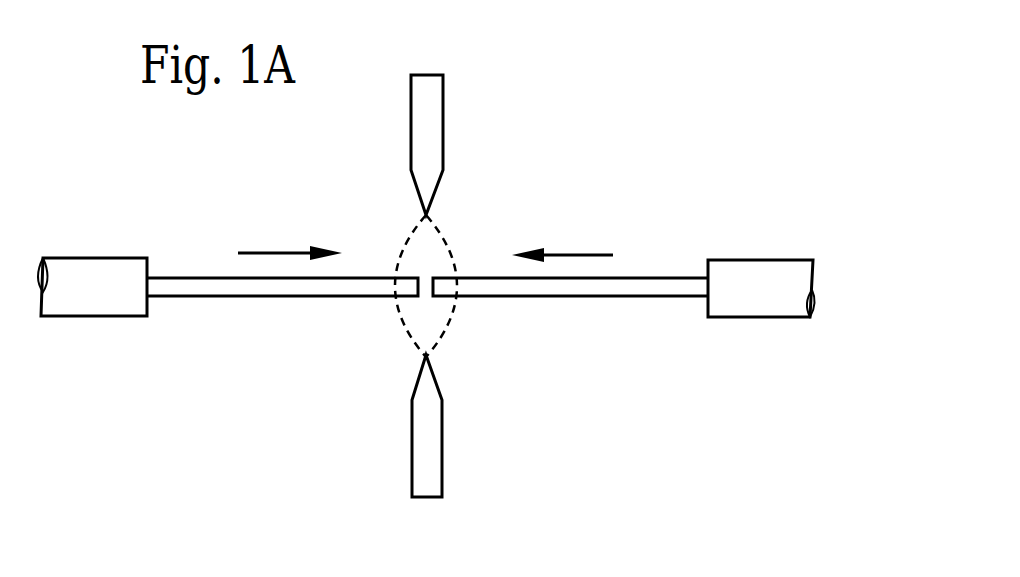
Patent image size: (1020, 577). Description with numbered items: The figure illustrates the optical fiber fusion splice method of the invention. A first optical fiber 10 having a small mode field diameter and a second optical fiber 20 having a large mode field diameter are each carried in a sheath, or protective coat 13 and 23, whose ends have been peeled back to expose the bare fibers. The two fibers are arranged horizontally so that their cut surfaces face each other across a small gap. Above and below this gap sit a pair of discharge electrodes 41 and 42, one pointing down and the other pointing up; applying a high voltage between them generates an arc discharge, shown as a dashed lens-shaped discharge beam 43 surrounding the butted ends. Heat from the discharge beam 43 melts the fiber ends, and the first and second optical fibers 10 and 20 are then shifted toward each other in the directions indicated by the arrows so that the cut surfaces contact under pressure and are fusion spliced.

The first optical fiber 10 is at (307, 285).
The sheath (protective coat) 13 is at (88, 310).
The second optical fiber 20 is at (543, 297).
The sheath (protective coat) 23 is at (750, 303).
The discharge electrode 41 is at (433, 130).
The discharge electrode 42 is at (437, 443).
The discharge beam 43 is at (452, 250).